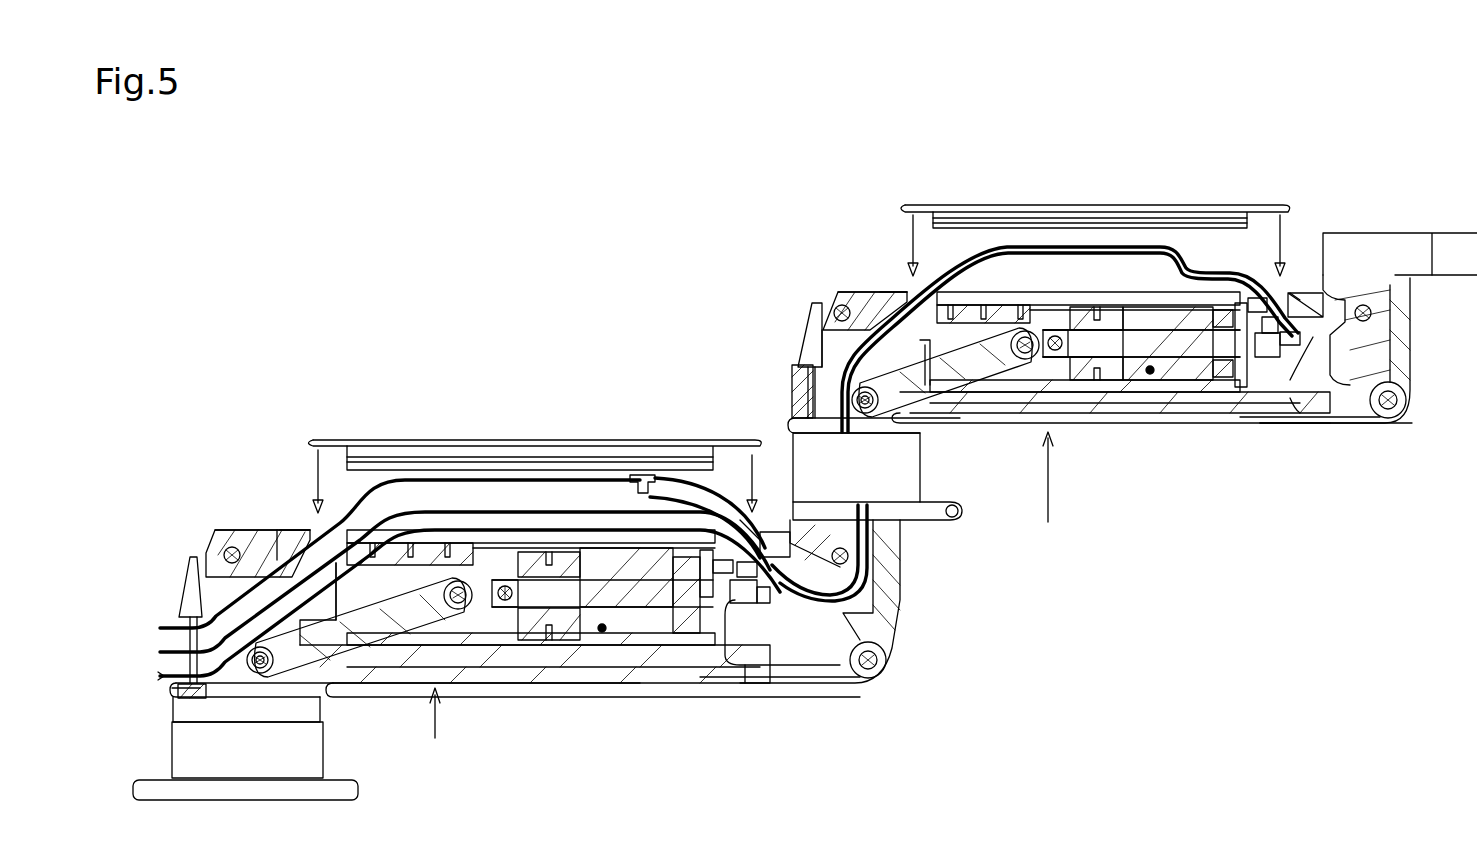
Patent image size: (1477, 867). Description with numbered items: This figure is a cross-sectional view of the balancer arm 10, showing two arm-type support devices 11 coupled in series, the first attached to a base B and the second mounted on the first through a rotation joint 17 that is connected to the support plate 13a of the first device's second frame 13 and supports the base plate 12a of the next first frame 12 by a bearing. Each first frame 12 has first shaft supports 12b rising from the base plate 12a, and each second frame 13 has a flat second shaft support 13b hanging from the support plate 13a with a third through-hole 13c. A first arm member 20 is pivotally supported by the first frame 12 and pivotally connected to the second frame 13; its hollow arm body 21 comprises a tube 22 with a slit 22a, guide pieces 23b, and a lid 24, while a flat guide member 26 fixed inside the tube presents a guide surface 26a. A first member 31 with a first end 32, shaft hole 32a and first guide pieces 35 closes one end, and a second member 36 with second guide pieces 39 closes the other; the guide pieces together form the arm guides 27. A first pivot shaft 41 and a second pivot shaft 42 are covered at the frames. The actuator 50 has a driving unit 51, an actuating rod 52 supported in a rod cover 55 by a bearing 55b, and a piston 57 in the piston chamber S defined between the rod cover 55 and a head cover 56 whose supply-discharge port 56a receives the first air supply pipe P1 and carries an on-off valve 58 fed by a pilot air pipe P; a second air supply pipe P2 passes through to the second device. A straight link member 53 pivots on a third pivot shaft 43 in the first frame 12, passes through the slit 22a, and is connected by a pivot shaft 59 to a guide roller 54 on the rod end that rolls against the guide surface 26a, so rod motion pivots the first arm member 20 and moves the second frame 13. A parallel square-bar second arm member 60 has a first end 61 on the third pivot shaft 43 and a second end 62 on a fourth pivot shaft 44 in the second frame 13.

The balancer arm 10 is at (1037, 690).
The arm-type support device 11 is at (810, 704).
The first frame 12 is at (205, 585).
The base plate 12a is at (178, 690).
The first shaft support 12b is at (185, 595).
The second frame 13 is at (905, 640).
The support plate 13a is at (960, 512).
The second shaft support 13b is at (900, 600).
The third through-hole 13c is at (882, 575).
The rotation joint 17 is at (323, 750).
The first arm member 20 is at (715, 554).
The arm body 21 is at (425, 662).
The tube 22 is at (433, 565).
The slit 22a is at (372, 662).
The guide piece 23b is at (665, 690).
The lid 24 is at (545, 440).
The guide member 26 is at (385, 545).
The guide surface 26a is at (448, 545).
The arm guide 27 is at (742, 597).
The first member 31 is at (275, 530).
The first end 32 is at (217, 540).
The shaft hole 32a is at (232, 548).
The first guide piece 35 is at (276, 684).
The second member 36 is at (752, 525).
The second guide piece 39 is at (740, 692).
The first pivot shaft 41 is at (292, 545).
The second pivot shaft 42 is at (860, 555).
The third pivot shaft 43 is at (258, 676).
The fourth pivot shaft 44 is at (885, 680).
The actuator 50 is at (585, 650).
The driving unit 51 is at (645, 660).
The actuating rod 52 is at (608, 585).
The link member 53 is at (300, 642).
The guide roller 54 is at (495, 610).
The rod cover 55 is at (555, 552).
The bearing 55b is at (548, 640).
The head cover 56 is at (725, 618).
The supply-discharge port 56a is at (762, 603).
The piston 57 is at (688, 635).
The on-off valve 58 is at (1268, 360).
The pivot shaft 59 is at (432, 590).
The second arm member 60 is at (760, 680).
The first end 61 is at (215, 690).
The second end 62 is at (868, 675).
The base B is at (358, 790).
The pilot air pipe P is at (160, 628).
The first air supply pipe P1 is at (178, 692).
The second air supply pipe P2 is at (158, 678).
The piston chamber S is at (594, 668).